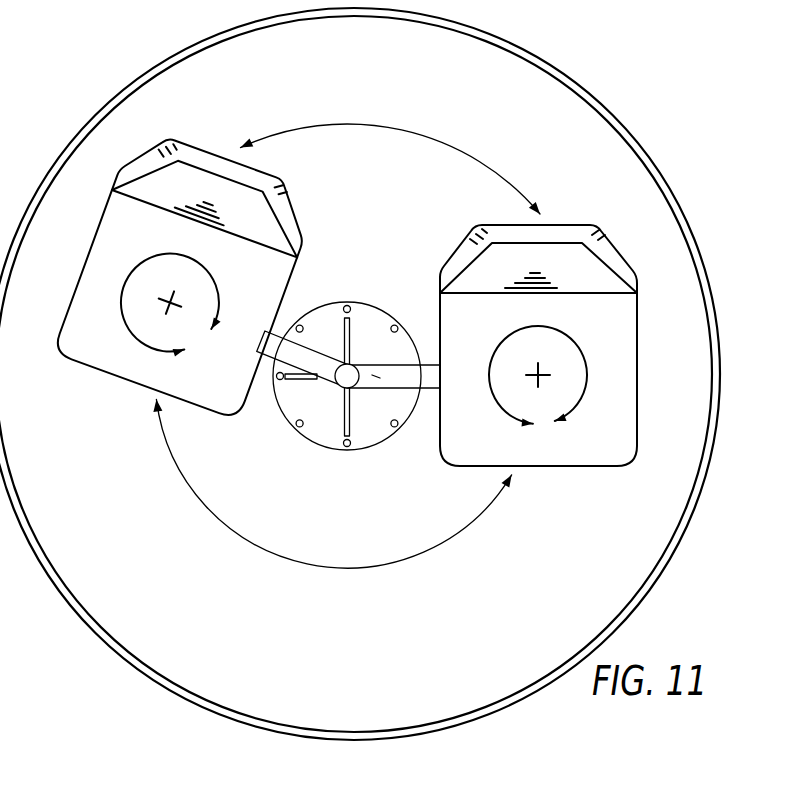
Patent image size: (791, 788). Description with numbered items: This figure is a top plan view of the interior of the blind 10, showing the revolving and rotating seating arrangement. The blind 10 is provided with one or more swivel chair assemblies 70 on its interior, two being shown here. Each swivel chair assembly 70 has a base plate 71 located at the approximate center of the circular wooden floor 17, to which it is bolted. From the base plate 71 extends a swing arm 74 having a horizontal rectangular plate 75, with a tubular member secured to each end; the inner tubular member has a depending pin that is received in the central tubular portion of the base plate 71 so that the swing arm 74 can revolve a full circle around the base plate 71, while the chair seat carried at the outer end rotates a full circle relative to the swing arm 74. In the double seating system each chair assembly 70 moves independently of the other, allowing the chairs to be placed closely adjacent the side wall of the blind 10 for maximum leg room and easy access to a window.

The blind 10 is at (649, 133).
The circular wooden floor 17 is at (158, 650).
The swivel chair assembly 70 is at (574, 482).
The base plate 71 is at (370, 437).
The swing arm 74 is at (320, 336).
The horizontal rectangular plate 75 is at (311, 370).